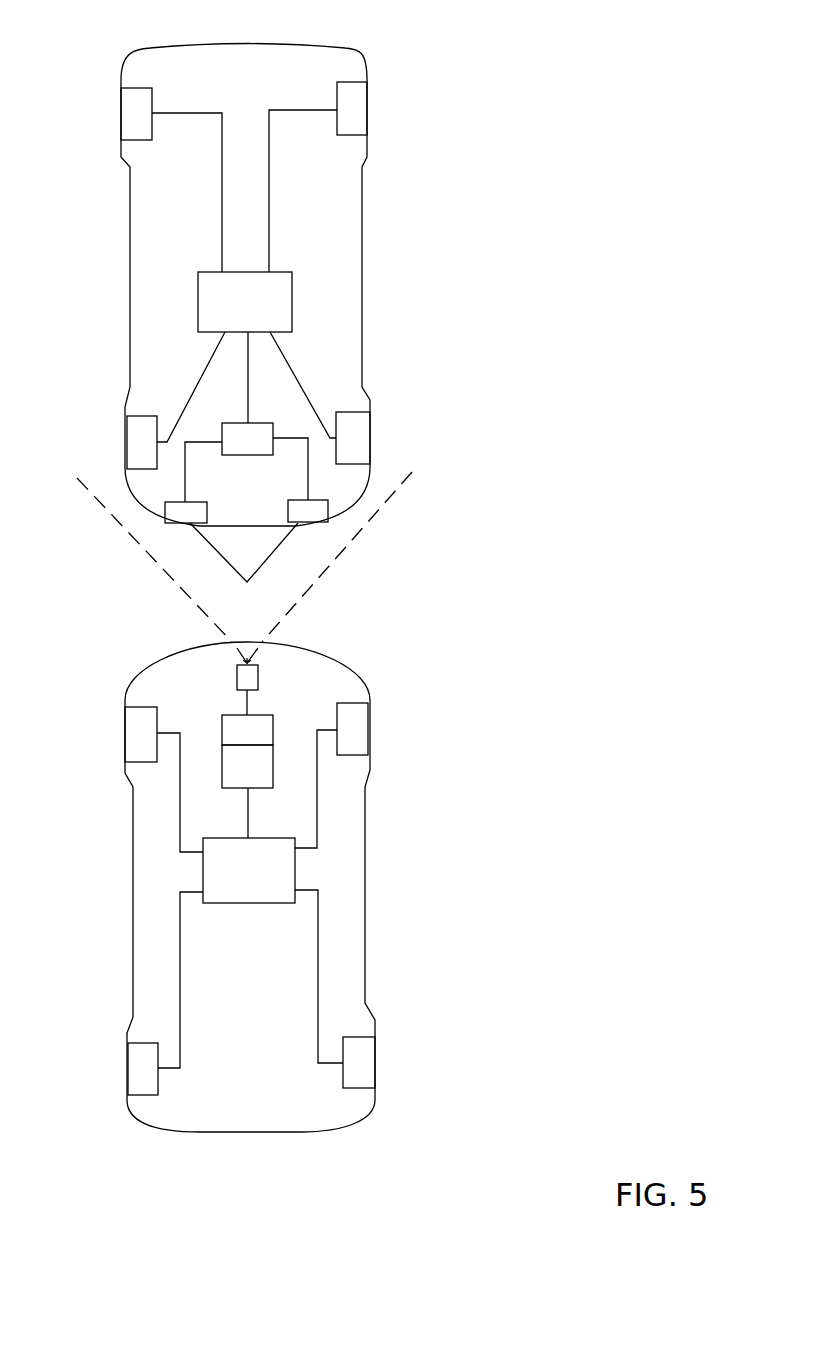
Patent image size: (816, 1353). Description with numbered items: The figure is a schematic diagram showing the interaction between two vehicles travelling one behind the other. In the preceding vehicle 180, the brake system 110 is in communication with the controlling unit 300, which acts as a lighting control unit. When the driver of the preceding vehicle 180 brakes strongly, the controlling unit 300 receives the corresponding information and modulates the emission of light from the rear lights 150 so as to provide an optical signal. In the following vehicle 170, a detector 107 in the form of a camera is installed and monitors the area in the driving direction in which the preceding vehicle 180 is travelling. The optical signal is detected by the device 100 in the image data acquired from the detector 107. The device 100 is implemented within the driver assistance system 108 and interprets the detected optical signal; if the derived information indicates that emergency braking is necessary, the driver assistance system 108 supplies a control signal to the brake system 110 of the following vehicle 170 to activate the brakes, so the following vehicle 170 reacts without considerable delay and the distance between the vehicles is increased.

The preceding vehicle 180 is at (128, 62).
The following vehicle 170 is at (137, 682).
The brake system 110 is at (292, 277).
The controlling unit 300 is at (248, 455).
The rear lights 150 is at (244, 557).
The detector 107 is at (258, 671).
The device 100 is at (247, 730).
The driver assistance system 108 is at (247, 766).